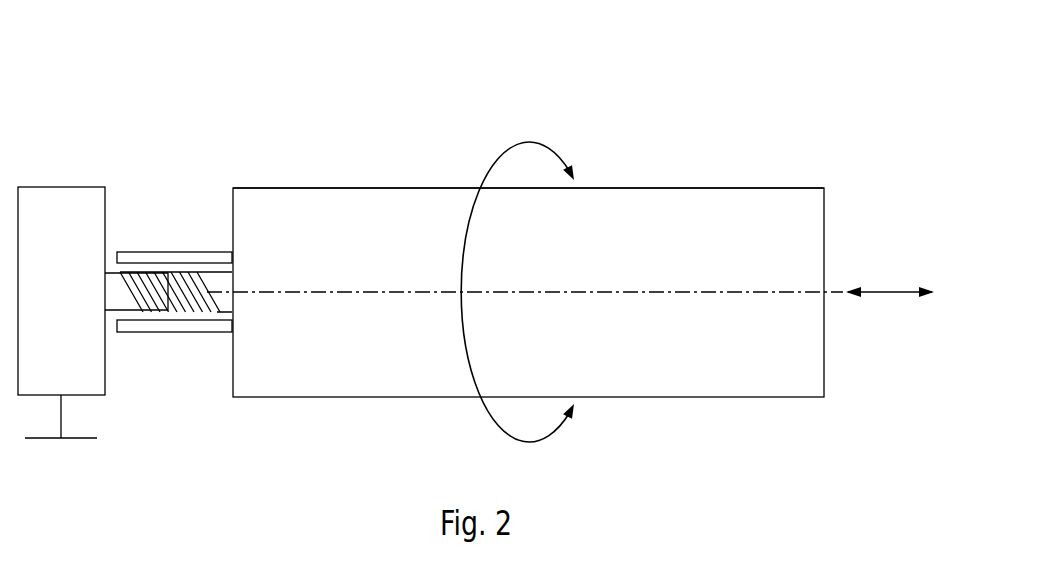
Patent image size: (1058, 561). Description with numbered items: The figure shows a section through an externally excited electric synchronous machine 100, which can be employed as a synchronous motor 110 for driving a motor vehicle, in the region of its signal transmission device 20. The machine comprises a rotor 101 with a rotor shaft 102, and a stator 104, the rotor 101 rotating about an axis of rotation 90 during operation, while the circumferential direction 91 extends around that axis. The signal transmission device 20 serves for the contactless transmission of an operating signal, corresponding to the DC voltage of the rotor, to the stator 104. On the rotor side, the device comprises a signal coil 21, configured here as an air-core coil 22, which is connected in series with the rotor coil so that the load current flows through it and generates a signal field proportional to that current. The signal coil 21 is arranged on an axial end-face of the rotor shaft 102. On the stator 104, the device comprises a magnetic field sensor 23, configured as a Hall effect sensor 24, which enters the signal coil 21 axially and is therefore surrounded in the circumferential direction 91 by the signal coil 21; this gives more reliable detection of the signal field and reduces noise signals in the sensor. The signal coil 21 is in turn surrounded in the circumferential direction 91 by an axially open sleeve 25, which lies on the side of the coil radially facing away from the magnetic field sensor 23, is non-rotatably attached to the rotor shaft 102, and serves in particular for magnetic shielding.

The signal transmission device 20 is at (168, 266).
The signal coil 21 is at (176, 339).
The air-core coil 22 is at (186, 314).
The magnetic field sensor 23 is at (136, 327).
The Hall effect sensor 24 is at (113, 301).
The sleeve 25 is at (200, 252).
The axis of rotation 90 is at (893, 292).
The circumferential direction 91 is at (528, 143).
The externally excited electric synchronous machine 100 is at (476, 221).
The synchronous motor 110 is at (793, 144).
The rotor 101 is at (528, 229).
The rotor shaft 102 is at (410, 210).
The stator 104 is at (64, 152).